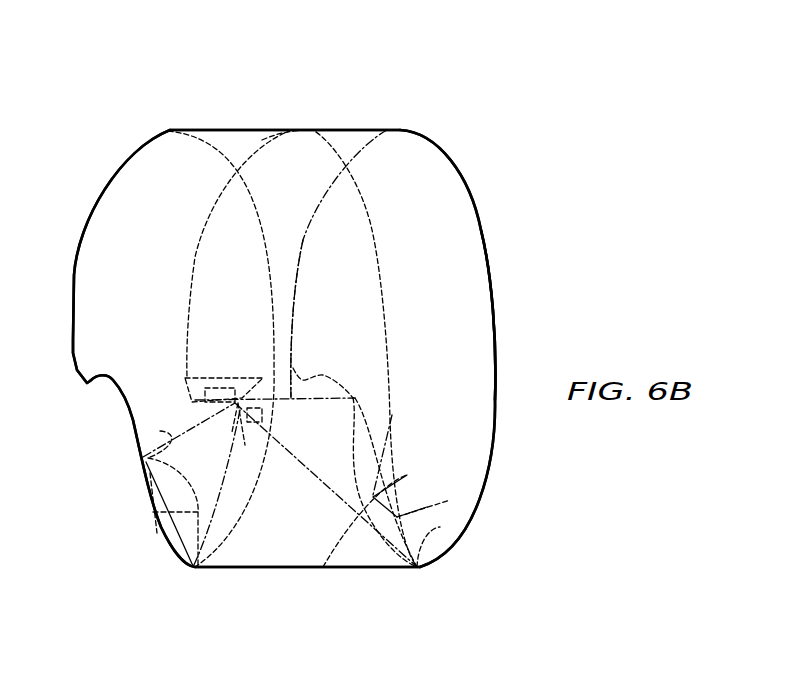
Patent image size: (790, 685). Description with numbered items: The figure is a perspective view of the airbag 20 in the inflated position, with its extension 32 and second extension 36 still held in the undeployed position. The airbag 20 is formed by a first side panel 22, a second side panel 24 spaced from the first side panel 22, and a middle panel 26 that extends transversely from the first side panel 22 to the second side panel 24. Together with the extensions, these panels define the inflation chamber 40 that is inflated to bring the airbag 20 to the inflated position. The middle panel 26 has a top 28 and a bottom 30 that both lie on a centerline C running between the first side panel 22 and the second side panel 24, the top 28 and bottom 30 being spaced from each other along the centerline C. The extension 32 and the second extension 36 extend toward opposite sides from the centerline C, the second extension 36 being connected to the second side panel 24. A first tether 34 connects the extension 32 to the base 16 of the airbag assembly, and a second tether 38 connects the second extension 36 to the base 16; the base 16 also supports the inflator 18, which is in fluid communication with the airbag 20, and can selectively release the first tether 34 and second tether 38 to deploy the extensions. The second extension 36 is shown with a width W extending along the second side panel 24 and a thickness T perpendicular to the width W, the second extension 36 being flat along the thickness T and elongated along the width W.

The airbag 20 is at (500, 192).
The first side panel 22 is at (133, 212).
The second side panel 24 is at (465, 325).
The middle panel 26 is at (288, 160).
The top 28 is at (242, 123).
The bottom 30 is at (236, 573).
The extension 32 is at (160, 431).
The first tether 34 is at (257, 500).
The second extension 36 is at (323, 375).
The second tether 38 is at (294, 368).
The inflation chamber 40 is at (465, 219).
The base 16 is at (193, 401).
The inflator 18 is at (217, 377).
The centerline C is at (347, 160).
The width W is at (146, 472).
The thickness T is at (162, 527).